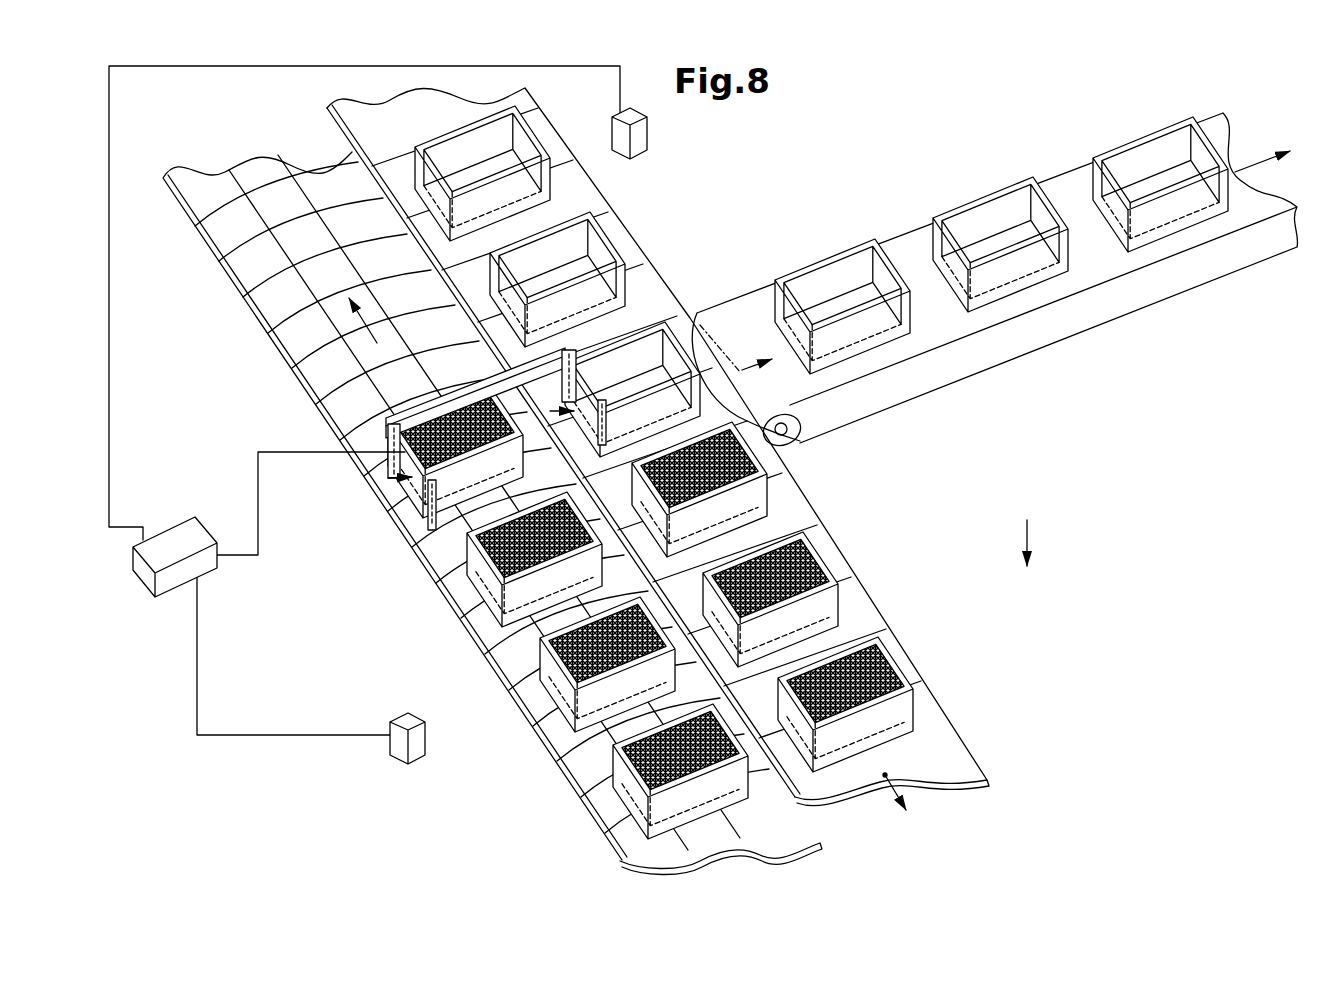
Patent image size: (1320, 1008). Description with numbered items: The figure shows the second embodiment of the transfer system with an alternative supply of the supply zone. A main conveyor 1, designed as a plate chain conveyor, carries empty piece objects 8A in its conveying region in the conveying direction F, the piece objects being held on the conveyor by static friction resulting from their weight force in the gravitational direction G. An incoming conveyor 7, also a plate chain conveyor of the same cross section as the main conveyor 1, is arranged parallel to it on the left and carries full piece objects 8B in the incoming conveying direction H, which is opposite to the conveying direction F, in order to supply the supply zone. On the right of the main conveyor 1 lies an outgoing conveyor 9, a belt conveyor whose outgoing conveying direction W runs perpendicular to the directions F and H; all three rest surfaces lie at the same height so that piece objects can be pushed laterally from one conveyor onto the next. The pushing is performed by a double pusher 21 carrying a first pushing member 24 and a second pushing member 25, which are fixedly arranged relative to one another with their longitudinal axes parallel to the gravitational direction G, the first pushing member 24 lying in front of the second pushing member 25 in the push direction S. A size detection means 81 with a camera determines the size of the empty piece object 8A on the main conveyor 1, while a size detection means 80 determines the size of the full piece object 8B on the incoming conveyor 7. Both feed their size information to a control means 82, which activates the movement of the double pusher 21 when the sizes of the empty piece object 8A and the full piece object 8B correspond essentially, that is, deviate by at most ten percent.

The main conveyor 1 is at (990, 733).
The incoming conveyor 7 is at (553, 801).
The outgoing conveyor 9 is at (998, 385).
The empty piece object 8A is at (640, 353).
The full piece object 8B is at (490, 580).
The double pusher 21 is at (410, 400).
The first pushing member 24 is at (500, 505).
The second pushing member 25 is at (414, 497).
The size detection means 80 is at (396, 724).
The size detection means 81 is at (636, 137).
The control means 82 is at (185, 572).
The push direction S is at (493, 352).
The incoming conveying direction H is at (368, 330).
The outgoing conveying direction W is at (1250, 162).
The gravitational direction G is at (1027, 529).
The conveying direction F is at (893, 792).